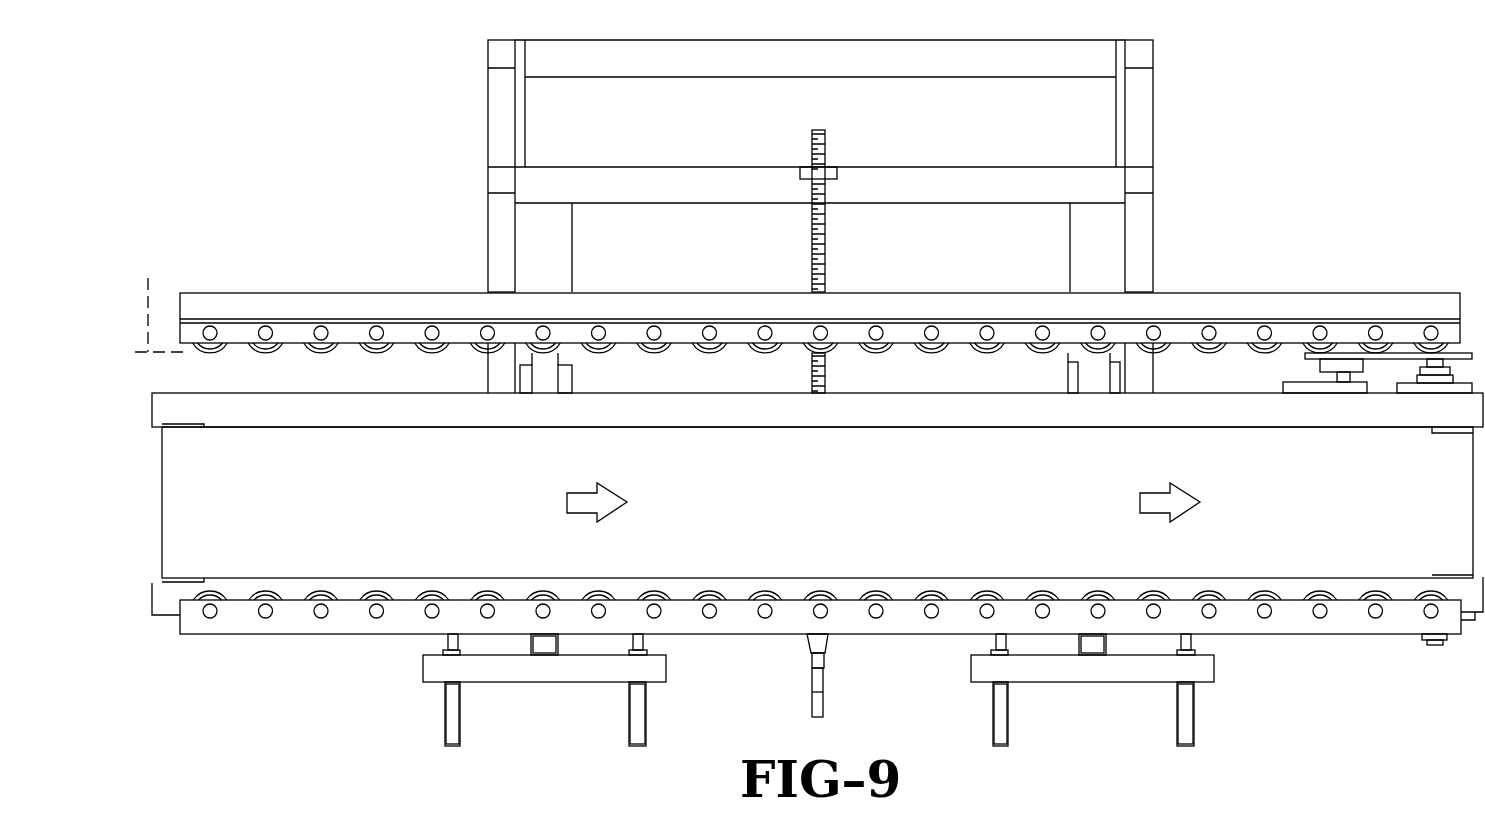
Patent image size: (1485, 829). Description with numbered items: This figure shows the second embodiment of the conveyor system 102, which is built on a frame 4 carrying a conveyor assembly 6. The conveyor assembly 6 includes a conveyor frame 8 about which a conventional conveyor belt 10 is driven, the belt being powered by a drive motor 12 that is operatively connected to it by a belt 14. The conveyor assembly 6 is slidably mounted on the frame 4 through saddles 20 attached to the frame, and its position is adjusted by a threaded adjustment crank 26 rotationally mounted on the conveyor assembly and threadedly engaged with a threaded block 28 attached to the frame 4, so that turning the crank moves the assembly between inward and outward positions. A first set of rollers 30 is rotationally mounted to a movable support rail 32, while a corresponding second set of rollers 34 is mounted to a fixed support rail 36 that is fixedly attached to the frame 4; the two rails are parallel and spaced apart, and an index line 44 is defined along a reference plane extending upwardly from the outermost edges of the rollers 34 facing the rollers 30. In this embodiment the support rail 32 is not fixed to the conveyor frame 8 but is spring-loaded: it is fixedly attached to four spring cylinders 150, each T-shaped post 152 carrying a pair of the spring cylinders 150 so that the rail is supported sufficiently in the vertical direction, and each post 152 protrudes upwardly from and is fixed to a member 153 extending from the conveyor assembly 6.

The frame 4 is at (478, 110).
The conveyor assembly 6 is at (350, 660).
The conveyor frame 8 is at (677, 405).
The conveyor belt 10 is at (830, 511).
The drive motor 12 is at (1302, 382).
The belt 14 is at (1390, 358).
The saddle 20 is at (527, 376).
The threaded adjustment crank 26 is at (827, 240).
The threaded block 28 is at (806, 176).
The first set of rollers 30 is at (268, 592).
The movable support rail 32 is at (741, 645).
The second set of rollers 34 is at (266, 355).
The fixed support rail 36 is at (1350, 327).
The index line 44 is at (160, 302).
The conveyor system 102 is at (350, 740).
The spring cylinders 150 is at (452, 740).
The T-shaped posts 152 is at (512, 672).
The member 153 is at (547, 648).